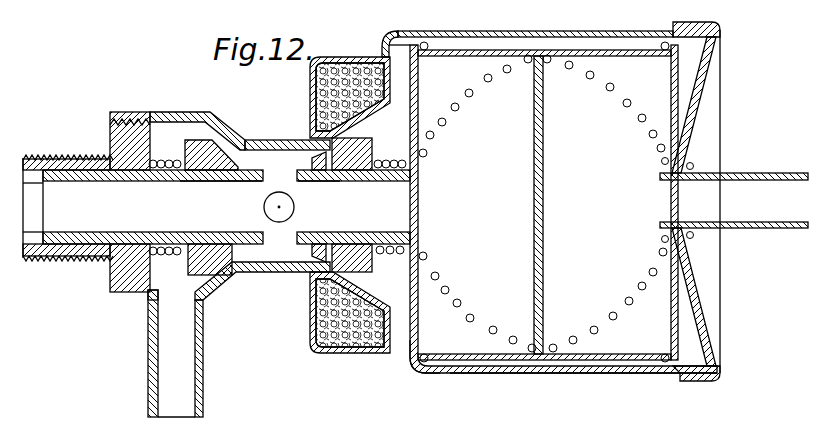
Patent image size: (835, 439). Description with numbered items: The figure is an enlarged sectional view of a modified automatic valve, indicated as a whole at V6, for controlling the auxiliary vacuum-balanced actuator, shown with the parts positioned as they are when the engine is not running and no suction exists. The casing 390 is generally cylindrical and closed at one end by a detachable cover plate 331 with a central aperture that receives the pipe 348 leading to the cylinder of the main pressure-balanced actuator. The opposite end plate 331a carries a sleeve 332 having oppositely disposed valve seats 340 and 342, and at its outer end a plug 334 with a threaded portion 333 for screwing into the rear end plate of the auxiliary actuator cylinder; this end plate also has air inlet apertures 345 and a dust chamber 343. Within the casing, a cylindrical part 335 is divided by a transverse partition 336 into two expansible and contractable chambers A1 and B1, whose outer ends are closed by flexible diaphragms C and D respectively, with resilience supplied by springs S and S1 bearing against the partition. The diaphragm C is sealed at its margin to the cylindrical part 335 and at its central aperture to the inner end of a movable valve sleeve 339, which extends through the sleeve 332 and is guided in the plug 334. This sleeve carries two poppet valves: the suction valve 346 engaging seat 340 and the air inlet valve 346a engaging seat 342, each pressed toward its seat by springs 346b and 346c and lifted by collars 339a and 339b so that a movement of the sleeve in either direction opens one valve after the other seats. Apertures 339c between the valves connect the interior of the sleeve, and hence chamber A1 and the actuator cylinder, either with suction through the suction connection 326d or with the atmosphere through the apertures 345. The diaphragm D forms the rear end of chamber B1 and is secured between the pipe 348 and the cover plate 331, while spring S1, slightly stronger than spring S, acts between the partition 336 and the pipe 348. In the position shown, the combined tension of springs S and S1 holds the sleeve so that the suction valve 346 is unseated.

The movable valve sleeve 339 is at (114, 181).
The collar 339a is at (218, 181).
The collar 339b is at (330, 181).
The apertures 339c is at (294, 207).
The threaded portion 333 is at (49, 258).
The plug 334 is at (112, 270).
The valve seat 340 is at (237, 105).
The sleeve 332 is at (266, 140).
The suction valve 346 is at (216, 300).
The air inlet valve 346a is at (358, 146).
The spring 346b is at (140, 300).
The spring 346c is at (384, 250).
The suction connection 326d is at (197, 403).
The air inlet apertures 345 is at (358, 70).
The dust chamber 343 is at (326, 354).
The valve seat 342 is at (318, 290).
The housing 390 is at (558, 31).
The automatic valve V6 is at (412, 25).
The detachable cover plate 331 is at (693, 117).
The end plate 331a is at (387, 364).
The cylindrical part 335 is at (600, 360).
The transverse partition 336 is at (545, 250).
The pipe 348 is at (765, 168).
The expansible and contractable chamber A1 is at (477, 203).
The expansible and contractable chamber B1 is at (607, 203).
The spring S is at (470, 96).
The spring S1 is at (626, 103).
The diaphragm C is at (418, 322).
The diaphragm D is at (671, 320).